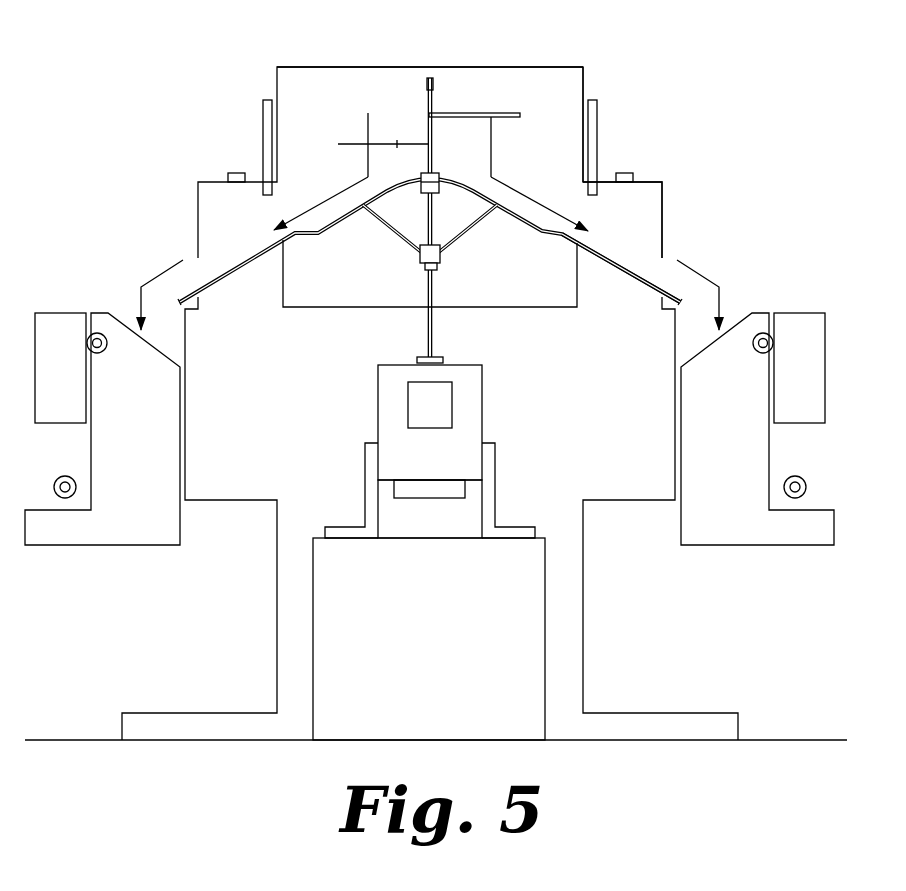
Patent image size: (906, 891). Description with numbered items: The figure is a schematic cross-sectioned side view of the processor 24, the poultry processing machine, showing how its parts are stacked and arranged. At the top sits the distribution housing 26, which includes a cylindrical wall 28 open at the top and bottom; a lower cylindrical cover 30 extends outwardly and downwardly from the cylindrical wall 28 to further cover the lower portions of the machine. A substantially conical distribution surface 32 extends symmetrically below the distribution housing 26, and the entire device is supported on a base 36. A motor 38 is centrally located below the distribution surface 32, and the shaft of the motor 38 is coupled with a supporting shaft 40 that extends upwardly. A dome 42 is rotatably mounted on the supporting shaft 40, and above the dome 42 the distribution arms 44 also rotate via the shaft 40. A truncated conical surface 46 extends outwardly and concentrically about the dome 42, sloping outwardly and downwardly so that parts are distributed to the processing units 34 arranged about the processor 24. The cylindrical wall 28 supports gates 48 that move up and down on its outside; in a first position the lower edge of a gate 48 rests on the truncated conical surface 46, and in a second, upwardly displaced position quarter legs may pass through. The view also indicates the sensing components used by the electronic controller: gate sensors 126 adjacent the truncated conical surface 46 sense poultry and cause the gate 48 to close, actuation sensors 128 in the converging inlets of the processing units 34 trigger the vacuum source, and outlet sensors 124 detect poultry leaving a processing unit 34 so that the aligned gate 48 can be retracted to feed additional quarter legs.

The processor 24 is at (654, 127).
The distribution housing 26 is at (520, 67).
The cylindrical wall 28 is at (584, 80).
The lower cylindrical cover 30 is at (663, 207).
The conical distribution surface 32 is at (317, 230).
The processing unit 34 is at (752, 312).
The base 36 is at (585, 645).
The motor 38 is at (483, 400).
The supporting shaft 40 is at (434, 287).
The dome 42 is at (393, 187).
The distribution arms 44 is at (458, 113).
The truncated conical surface 46 is at (615, 258).
The gate 48 is at (598, 117).
The outlet sensor 124 is at (800, 478).
The gate sensor 126 is at (630, 173).
The actuation sensor 128 is at (97, 332).